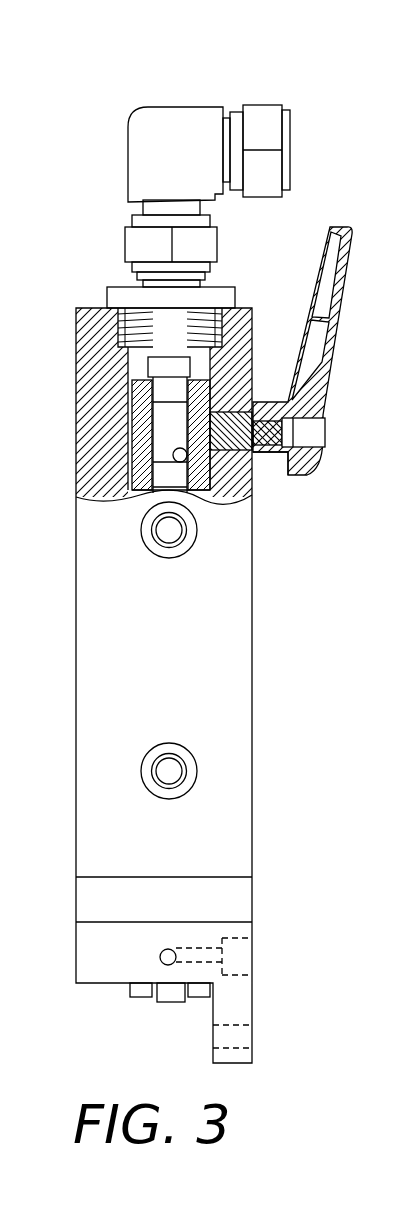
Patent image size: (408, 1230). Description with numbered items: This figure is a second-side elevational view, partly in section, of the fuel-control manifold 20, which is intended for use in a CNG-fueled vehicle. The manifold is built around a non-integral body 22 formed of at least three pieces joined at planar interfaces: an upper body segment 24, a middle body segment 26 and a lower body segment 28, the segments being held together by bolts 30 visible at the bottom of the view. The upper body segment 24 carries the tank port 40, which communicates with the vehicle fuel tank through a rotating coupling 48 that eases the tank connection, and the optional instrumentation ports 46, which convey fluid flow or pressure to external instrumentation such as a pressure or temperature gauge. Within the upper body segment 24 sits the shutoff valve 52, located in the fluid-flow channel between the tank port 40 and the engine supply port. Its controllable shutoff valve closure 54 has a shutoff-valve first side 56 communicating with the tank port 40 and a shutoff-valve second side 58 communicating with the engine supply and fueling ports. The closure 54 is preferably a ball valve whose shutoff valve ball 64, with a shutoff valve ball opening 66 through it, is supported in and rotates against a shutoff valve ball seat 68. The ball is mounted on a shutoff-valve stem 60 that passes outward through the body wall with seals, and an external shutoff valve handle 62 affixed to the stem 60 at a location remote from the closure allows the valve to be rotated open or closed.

The fuel-control manifold 20 is at (120, 92).
The non-integral body 22 is at (70, 338).
The upper body segment 24 is at (76, 583).
The middle body segment 26 is at (76, 890).
The lower body segment 28 is at (76, 955).
The bolts 30 is at (192, 1004).
The tank port 40 is at (137, 284).
The instrumentation ports 46 is at (176, 546).
The rotating coupling 48 is at (133, 222).
The shutoff valve 52 is at (262, 474).
The shutoff valve closure 54 is at (120, 437).
The shutoff-valve first side 56 is at (132, 392).
The shutoff-valve second side 58 is at (125, 466).
The shutoff-valve stem 60 is at (251, 402).
The shutoff valve handle 62 is at (338, 300).
The shutoff valve ball 64 is at (130, 417).
The shutoff valve ball opening 66 is at (213, 498).
The shutoff valve ball seat 68 is at (245, 388).